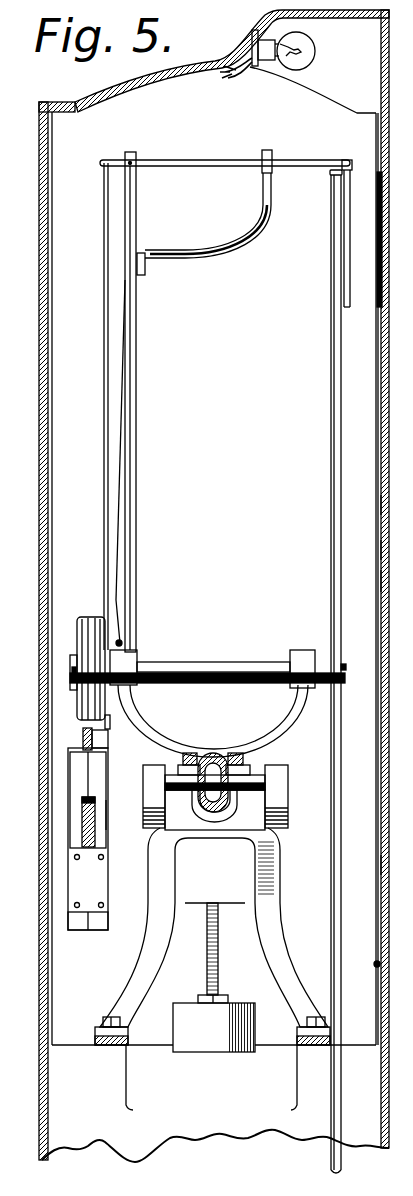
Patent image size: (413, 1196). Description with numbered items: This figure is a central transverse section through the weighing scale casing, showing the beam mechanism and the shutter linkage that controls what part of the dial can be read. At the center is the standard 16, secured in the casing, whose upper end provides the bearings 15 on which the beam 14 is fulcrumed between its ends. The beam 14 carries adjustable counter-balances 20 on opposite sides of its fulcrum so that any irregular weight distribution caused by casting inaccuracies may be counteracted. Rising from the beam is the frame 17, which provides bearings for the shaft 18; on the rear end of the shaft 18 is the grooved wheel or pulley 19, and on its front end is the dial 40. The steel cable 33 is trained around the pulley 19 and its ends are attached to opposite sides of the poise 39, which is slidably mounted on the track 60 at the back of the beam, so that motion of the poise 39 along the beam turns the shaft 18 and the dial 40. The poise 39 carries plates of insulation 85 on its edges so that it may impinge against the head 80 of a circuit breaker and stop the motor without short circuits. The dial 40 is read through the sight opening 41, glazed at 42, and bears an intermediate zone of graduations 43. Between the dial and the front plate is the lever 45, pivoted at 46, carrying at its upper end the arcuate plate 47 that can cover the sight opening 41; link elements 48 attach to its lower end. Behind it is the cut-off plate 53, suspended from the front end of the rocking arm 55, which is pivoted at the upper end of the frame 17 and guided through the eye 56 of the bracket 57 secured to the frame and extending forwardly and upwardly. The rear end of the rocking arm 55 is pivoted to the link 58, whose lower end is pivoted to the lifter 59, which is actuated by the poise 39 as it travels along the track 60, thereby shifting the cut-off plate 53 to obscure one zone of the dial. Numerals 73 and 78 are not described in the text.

The beam 14 is at (222, 752).
The bearings 15 is at (283, 782).
The standard 16 is at (282, 930).
The frame 17 is at (138, 565).
The shaft 18 is at (207, 668).
The grooved wheel or pulley 19 is at (73, 652).
The adjustable counter-balances 20 is at (207, 968).
The steel cable 33 is at (97, 617).
The poise 39 is at (105, 812).
The dial 40 is at (333, 600).
The sight opening 41 is at (383, 250).
The glazing 42 is at (383, 290).
The intermediate zone of graduations 43 is at (412, 862).
The lever 45 is at (378, 795).
The pivot 46 is at (378, 700).
The arcuate plate 47 is at (373, 262).
The link elements 48 is at (377, 964).
The cut-off plate 53 is at (345, 265).
The rocking arm 55 is at (276, 160).
The eye 56 is at (262, 152).
The bracket 57 is at (200, 262).
The link 58 is at (105, 372).
The lifter 59 is at (110, 727).
The track 60 is at (95, 820).
The casing part 73 is at (397, 552).
The casing part 78 is at (397, 507).
The head 80 is at (397, 584).
The plates of insulation 85 is at (98, 880).